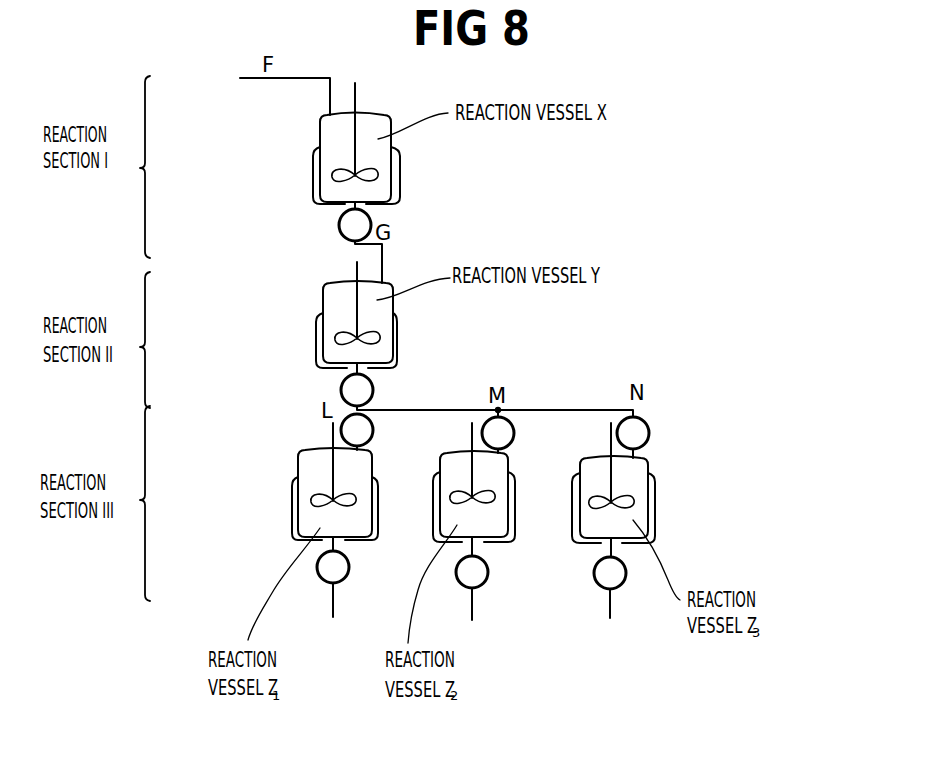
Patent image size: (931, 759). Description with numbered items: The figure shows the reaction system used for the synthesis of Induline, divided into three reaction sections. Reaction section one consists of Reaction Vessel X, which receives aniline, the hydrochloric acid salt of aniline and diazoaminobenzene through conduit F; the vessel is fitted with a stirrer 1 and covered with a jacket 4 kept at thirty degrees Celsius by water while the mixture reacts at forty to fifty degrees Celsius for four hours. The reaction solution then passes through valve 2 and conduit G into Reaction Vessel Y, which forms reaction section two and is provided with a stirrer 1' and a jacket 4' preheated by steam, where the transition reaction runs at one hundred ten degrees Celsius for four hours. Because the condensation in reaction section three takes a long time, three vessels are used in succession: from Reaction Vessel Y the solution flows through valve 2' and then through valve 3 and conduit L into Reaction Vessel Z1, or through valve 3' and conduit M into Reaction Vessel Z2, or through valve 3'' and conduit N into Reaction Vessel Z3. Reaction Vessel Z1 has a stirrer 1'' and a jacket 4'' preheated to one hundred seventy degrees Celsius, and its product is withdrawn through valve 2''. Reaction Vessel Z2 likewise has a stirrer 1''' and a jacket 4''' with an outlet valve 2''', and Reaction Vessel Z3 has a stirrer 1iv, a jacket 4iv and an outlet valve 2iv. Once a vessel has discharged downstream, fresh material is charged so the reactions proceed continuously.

The stirrer 1 is at (355, 141).
The valve 2 is at (326, 231).
The jacket 4 is at (369, 179).
The stirrer 1' is at (342, 318).
The valve 2' is at (330, 390).
The jacket 4' is at (373, 340).
The valve 3 is at (369, 435).
The valve 3' is at (514, 433).
The valve 3'' is at (649, 437).
The stirrer 1'' is at (317, 487).
The valve 2'' is at (321, 584).
The jacket 4'' is at (348, 519).
The stirrer 1''' is at (461, 489).
The valve 2''' is at (491, 588).
The jacket 4''' is at (495, 509).
The stirrer 1iv is at (590, 460).
The valve 2iv is at (596, 585).
The jacket 4iv is at (655, 525).